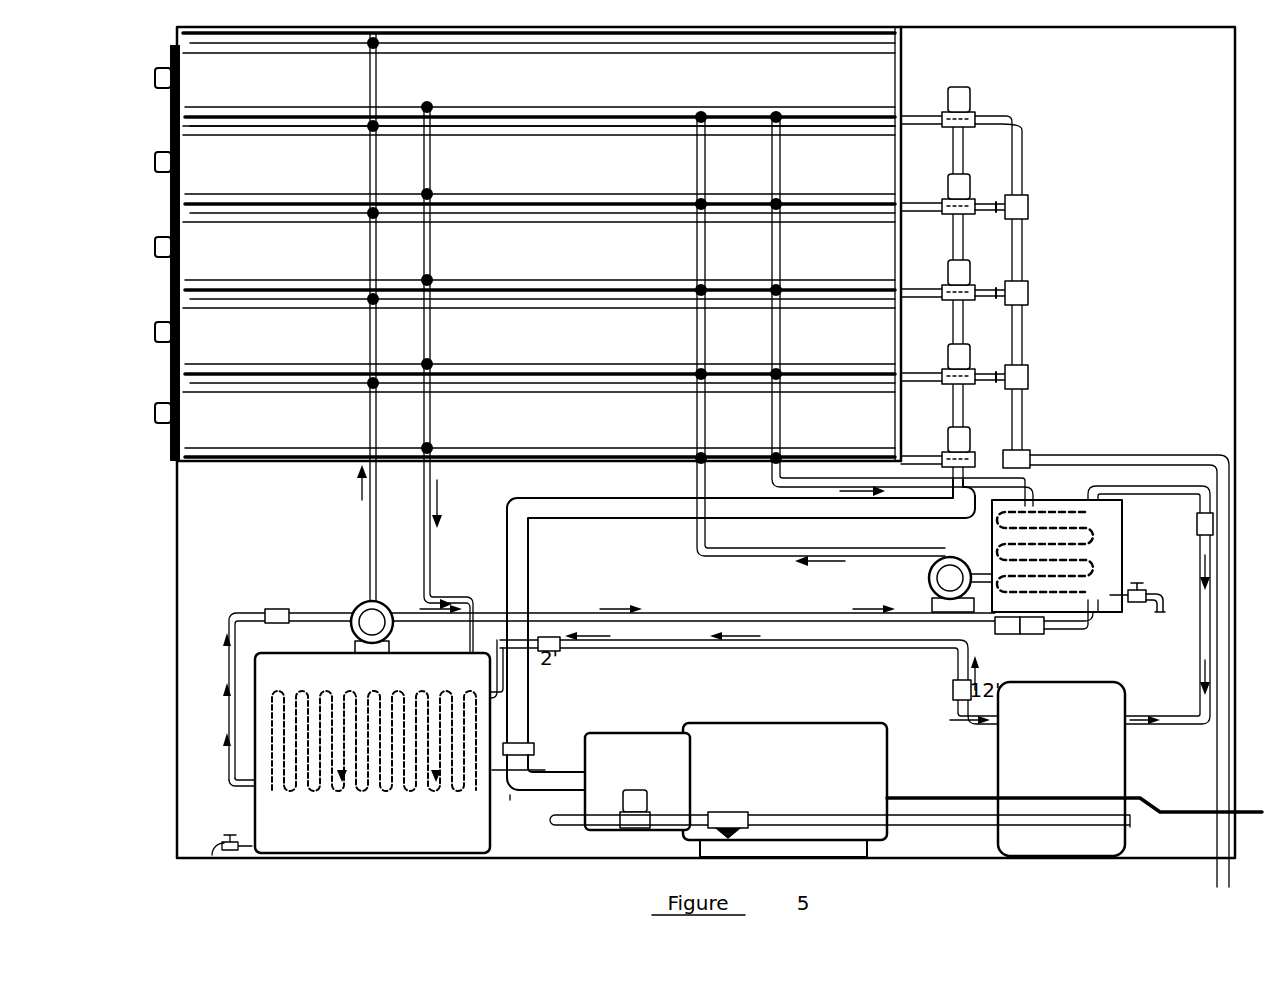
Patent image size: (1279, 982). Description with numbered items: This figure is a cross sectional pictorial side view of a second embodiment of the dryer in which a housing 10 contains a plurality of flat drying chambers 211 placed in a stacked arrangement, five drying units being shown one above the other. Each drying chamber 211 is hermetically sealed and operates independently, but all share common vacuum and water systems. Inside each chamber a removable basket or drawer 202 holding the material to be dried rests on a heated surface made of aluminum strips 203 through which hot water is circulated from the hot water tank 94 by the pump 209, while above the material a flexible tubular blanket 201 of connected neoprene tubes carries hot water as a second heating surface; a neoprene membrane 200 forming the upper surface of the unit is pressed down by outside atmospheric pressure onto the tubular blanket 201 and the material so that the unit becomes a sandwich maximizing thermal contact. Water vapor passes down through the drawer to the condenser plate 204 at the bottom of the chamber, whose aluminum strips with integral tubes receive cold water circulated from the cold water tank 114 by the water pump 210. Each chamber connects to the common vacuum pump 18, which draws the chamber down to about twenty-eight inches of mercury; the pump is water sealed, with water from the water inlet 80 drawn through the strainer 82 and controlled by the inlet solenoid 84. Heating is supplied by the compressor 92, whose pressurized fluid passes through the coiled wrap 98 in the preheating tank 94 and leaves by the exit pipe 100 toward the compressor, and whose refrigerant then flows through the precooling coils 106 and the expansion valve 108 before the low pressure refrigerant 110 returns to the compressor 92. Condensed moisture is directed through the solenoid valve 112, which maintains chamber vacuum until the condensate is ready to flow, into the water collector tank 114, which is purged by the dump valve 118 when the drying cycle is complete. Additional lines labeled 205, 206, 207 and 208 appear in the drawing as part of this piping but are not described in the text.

The housing 10 is at (1228, 382).
The vacuum pump 18 is at (806, 744).
The water inlet 80 is at (1138, 823).
The strainer 82 is at (732, 810).
The inlet solenoid 84 is at (622, 790).
The compressor 92 is at (1037, 705).
The hot water preheating tank 94 is at (360, 828).
The coiled wrap 98 is at (316, 782).
The exit pipe 100 is at (238, 789).
The precooling coils 106 is at (1062, 505).
The expansion valve 108 is at (1030, 634).
The low pressure refrigerant 110 is at (1160, 456).
The solenoid valve 112 is at (975, 447).
The water collector tank 114 is at (1112, 597).
The dump valve 118 is at (1152, 598).
The neoprene membrane 200 is at (832, 50).
The tubular blanket 201 is at (880, 36).
The removable basket or drawer 202 is at (838, 127).
The aluminum strips 203 is at (842, 131).
The condenser plate 204 is at (886, 119).
The collector return pipe 205 is at (432, 562).
The valve manifold pipe 206 is at (788, 161).
The downcomer pipe 207 is at (714, 248).
The collector supply pipe 208 is at (366, 556).
The pump 209 is at (352, 605).
The water pump 210 is at (927, 578).
The drying chamber 211 is at (1026, 300).